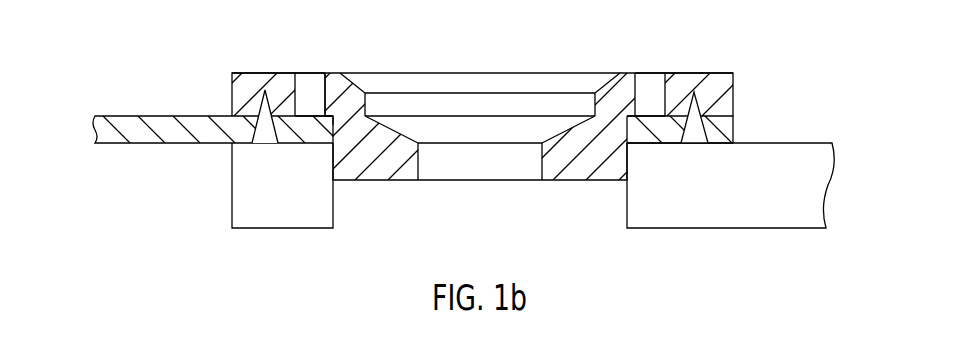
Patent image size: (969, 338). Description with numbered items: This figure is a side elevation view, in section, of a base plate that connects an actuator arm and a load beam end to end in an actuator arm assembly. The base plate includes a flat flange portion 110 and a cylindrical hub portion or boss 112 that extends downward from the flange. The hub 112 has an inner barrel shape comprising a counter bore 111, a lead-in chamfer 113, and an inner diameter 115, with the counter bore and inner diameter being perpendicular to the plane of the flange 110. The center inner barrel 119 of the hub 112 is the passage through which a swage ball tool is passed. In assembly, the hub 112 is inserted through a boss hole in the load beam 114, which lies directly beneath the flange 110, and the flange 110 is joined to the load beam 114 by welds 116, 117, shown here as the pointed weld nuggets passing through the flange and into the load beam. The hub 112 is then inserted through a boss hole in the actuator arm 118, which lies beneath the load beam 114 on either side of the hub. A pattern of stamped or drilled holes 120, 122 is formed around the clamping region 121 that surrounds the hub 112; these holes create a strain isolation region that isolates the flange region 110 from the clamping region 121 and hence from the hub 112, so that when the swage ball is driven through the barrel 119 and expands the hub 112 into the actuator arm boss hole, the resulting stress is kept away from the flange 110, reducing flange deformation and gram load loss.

The flange portion 110 is at (230, 81).
The counter bore 111 is at (380, 93).
The hub portion 112 is at (356, 170).
The lead-in chamfer 113 is at (406, 144).
The load beam 114 is at (140, 118).
The inner diameter 115 is at (420, 168).
The weld 116 is at (265, 90).
The weld 117 is at (700, 92).
The actuator arm 118 is at (247, 195).
The inner barrel 119 is at (477, 102).
The hole 120 is at (298, 73).
The clamping region 121 is at (334, 78).
The hole 122 is at (663, 80).